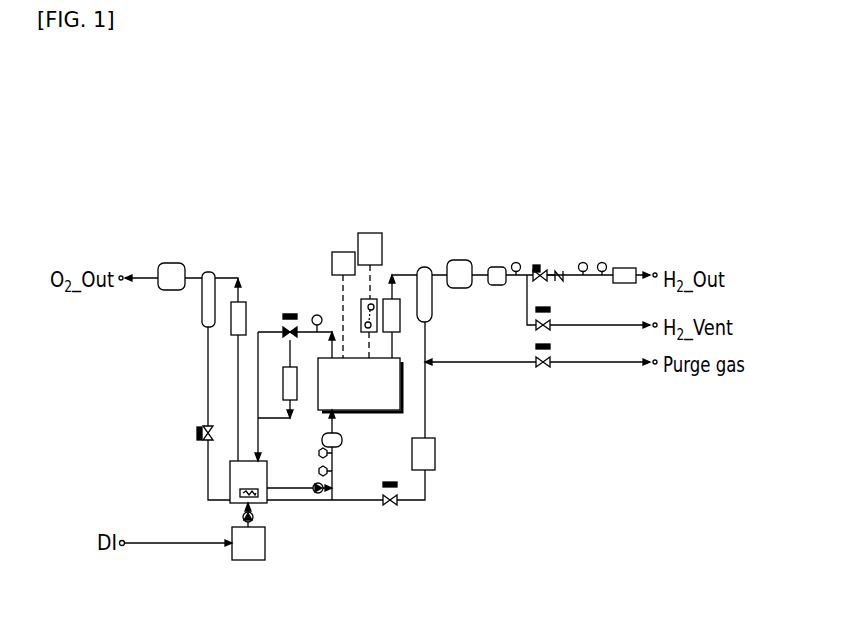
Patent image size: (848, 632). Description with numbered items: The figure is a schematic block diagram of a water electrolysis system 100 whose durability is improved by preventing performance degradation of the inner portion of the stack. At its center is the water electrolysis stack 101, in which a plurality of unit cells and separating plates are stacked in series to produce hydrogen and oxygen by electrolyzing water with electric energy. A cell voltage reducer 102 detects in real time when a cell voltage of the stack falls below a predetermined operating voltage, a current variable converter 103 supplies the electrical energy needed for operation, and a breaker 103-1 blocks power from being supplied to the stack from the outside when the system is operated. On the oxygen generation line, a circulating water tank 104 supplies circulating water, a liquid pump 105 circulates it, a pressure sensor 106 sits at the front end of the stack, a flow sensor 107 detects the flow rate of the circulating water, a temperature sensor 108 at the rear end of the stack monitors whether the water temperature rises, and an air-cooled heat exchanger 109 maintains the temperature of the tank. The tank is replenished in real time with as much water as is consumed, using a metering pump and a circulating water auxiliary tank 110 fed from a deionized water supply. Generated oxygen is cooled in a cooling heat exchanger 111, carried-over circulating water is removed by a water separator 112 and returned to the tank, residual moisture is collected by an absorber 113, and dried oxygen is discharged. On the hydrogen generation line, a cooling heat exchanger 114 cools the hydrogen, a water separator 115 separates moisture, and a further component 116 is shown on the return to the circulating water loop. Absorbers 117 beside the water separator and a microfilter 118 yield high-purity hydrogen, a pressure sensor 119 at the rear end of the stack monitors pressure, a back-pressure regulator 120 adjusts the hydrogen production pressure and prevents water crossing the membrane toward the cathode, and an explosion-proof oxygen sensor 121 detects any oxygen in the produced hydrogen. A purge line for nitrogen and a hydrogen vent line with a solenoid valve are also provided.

The water electrolysis system 100 is at (512, 161).
The water electrolysis stack 101 is at (402, 383).
The cell voltage reducer 102 is at (341, 252).
The current variable converter 103 is at (370, 233).
The breaker 103-1 is at (372, 299).
The circulating water tank 104 is at (230, 483).
The liquid pump 105 is at (317, 494).
The pressure sensor 106 is at (319, 471).
The flow sensor 107 is at (342, 440).
The temperature sensor 108 is at (317, 315).
The air-cooled heat exchanger 109 is at (283, 389).
The circulating water auxiliary tank 110 is at (250, 560).
The cooling heat exchanger 111 is at (240, 302).
The water separator 112 is at (209, 272).
The absorber 113 is at (172, 263).
The cooling heat exchanger 114 is at (400, 325).
The water separator 115 is at (432, 305).
The heat exchanger 116 is at (435, 455).
The absorber 117 is at (462, 260).
The microfilter 118 is at (499, 285).
The pressure sensor 119 is at (516, 262).
The back-pressure regulator 120 is at (541, 265).
The explosion-proof oxygen sensor 121 is at (625, 268).